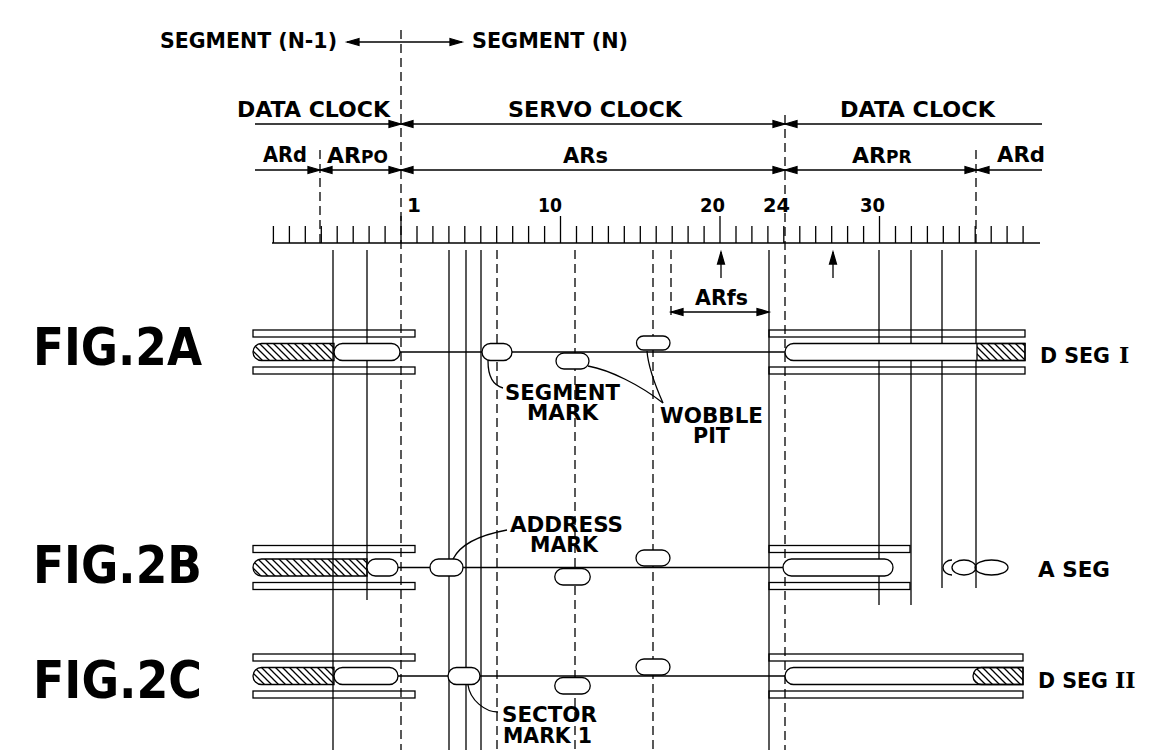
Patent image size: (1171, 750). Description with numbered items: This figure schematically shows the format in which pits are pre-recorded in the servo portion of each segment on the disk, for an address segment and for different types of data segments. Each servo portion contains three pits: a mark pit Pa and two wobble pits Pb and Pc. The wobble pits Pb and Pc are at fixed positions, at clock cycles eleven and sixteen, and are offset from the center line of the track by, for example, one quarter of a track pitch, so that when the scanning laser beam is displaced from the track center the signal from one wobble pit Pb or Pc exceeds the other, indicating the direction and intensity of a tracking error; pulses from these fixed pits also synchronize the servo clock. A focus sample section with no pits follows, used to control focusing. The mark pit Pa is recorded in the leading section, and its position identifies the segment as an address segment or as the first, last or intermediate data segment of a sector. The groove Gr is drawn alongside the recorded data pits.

The mark pit Pa is at (499, 344).
The wobble pit Pb is at (578, 353).
The wobble pit Pc is at (660, 351).
The groove Gr is at (1017, 330).